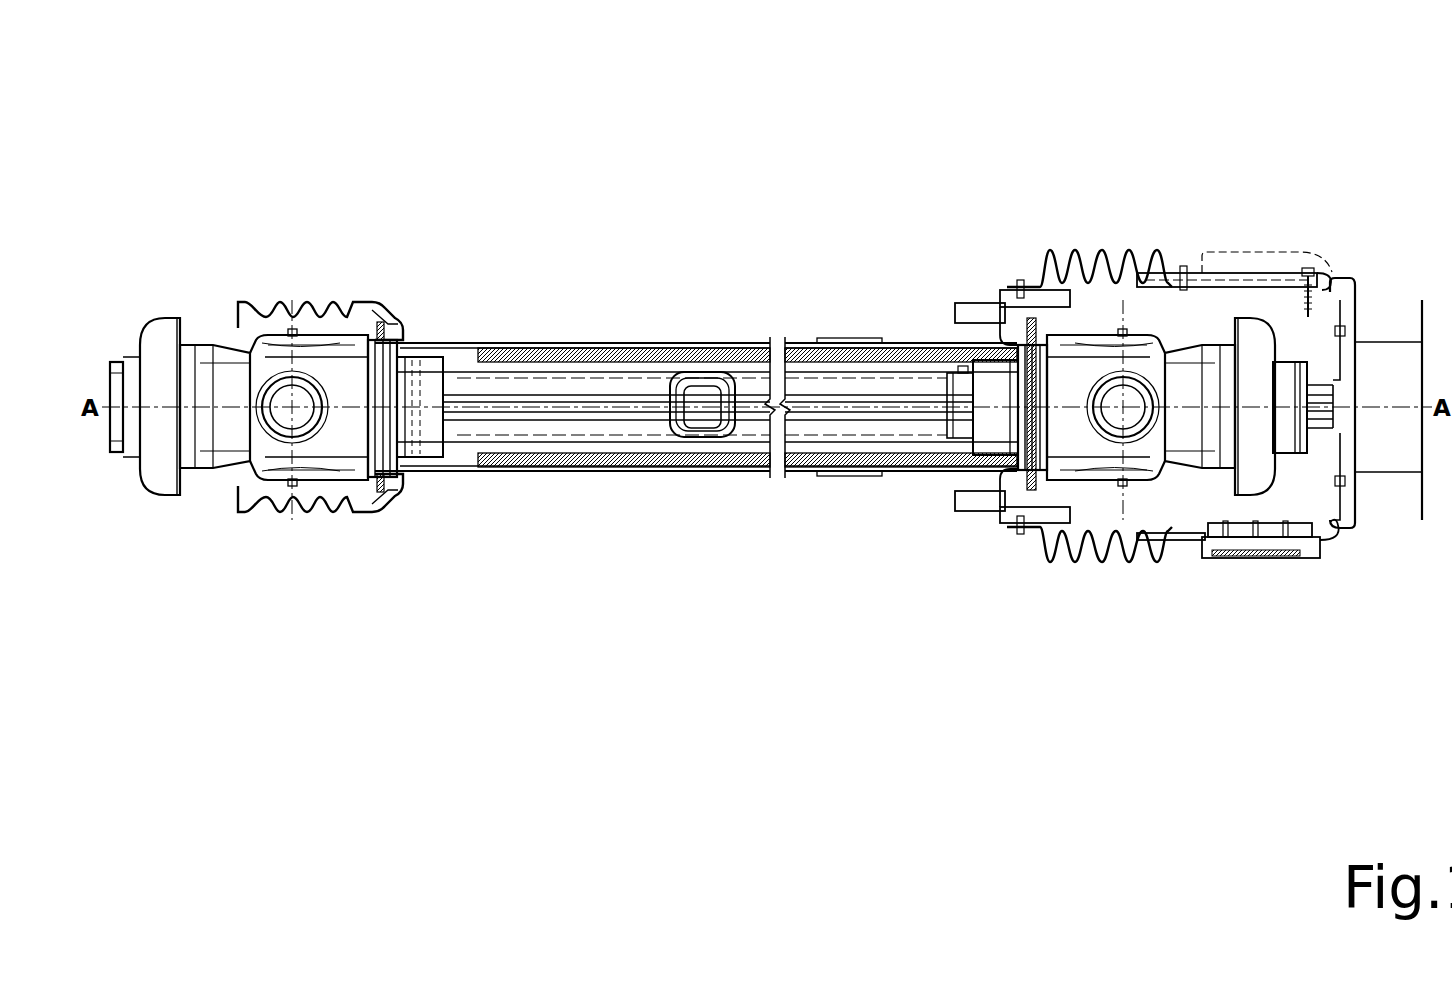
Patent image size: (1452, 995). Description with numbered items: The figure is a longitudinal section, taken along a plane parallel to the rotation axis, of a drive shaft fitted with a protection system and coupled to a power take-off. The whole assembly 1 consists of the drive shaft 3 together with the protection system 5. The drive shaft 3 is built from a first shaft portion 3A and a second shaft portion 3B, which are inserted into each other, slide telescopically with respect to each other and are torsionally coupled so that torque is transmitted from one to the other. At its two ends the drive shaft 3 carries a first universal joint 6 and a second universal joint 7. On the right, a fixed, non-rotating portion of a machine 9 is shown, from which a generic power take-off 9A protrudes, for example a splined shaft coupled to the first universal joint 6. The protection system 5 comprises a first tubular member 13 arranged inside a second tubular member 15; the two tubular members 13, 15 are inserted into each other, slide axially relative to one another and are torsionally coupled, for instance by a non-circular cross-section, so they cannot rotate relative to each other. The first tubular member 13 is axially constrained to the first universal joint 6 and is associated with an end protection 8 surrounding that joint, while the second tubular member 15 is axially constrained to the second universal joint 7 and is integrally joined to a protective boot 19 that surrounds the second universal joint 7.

The assembly 1 is at (929, 80).
The drive shaft 3 is at (465, 450).
The first shaft portion 3A is at (958, 428).
The second shaft portion 3B is at (458, 371).
The protection system 5 is at (655, 338).
The first universal joint 6 is at (1170, 349).
The second universal joint 7 is at (240, 350).
The end protection 8 is at (1095, 238).
The fixed portion of a machine 9 is at (1426, 353).
The power take-off 9A is at (1346, 398).
The first tubular member 13 is at (552, 360).
The second tubular member 15 is at (473, 345).
The protective boot 19 is at (319, 297).